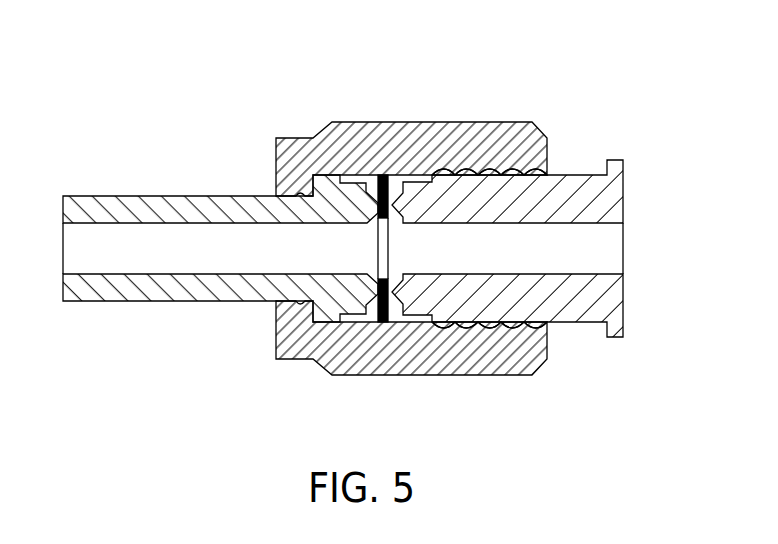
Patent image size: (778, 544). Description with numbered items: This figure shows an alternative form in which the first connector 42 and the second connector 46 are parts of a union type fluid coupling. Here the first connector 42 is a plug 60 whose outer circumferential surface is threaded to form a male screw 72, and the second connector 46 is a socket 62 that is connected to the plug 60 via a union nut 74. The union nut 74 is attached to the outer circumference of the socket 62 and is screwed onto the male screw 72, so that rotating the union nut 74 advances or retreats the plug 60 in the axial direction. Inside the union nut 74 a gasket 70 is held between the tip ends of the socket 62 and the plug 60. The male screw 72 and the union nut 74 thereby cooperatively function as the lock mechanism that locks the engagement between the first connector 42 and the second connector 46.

The socket 62 is at (220, 211).
The second connector 46 is at (167, 199).
The union nut 74 is at (367, 121).
The male screw 72 is at (487, 331).
The plug 60 is at (528, 200).
The first connector 42 is at (580, 174).
The gasket 70 is at (377, 249).